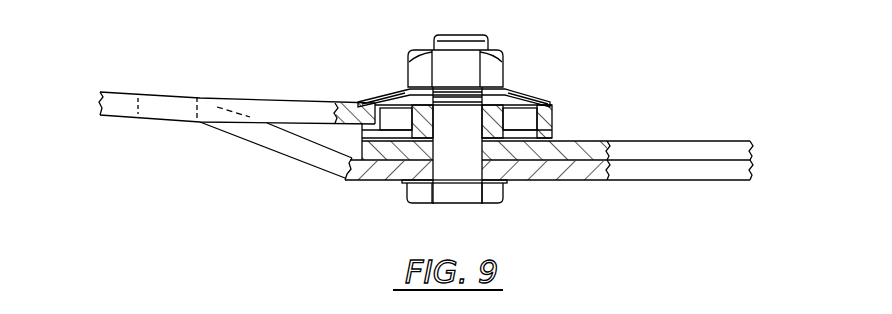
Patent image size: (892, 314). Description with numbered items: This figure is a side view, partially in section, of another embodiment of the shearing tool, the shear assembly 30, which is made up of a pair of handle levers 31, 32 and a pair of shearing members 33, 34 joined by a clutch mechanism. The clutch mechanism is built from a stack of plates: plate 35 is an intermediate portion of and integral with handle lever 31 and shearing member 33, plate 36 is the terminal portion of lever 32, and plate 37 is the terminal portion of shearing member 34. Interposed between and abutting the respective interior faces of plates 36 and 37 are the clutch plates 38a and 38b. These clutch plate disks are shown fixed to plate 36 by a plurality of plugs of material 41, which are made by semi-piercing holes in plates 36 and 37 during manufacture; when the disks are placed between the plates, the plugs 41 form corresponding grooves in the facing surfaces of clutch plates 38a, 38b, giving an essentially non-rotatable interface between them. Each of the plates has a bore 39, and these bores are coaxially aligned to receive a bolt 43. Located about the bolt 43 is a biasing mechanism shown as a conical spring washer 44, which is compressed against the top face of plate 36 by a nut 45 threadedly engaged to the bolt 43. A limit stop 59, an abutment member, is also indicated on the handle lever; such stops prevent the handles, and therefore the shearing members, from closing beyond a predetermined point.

The shear assembly 30 is at (527, 56).
The handle lever 31 is at (262, 147).
The handle lever 32 is at (257, 99).
The shearing member 33 is at (718, 181).
The shearing member 34 is at (705, 141).
The plate 35 is at (378, 181).
The plate 36 is at (553, 106).
The plate 37 is at (352, 153).
The clutch plate 38a is at (556, 124).
The clutch plate 38b is at (556, 138).
The bore 39 is at (440, 86).
The plugs of material 41 is at (405, 92).
The bolt 43 is at (500, 198).
The conical spring washer 44 is at (518, 88).
The nut 45 is at (488, 43).
The limit stops 59 is at (137, 111).